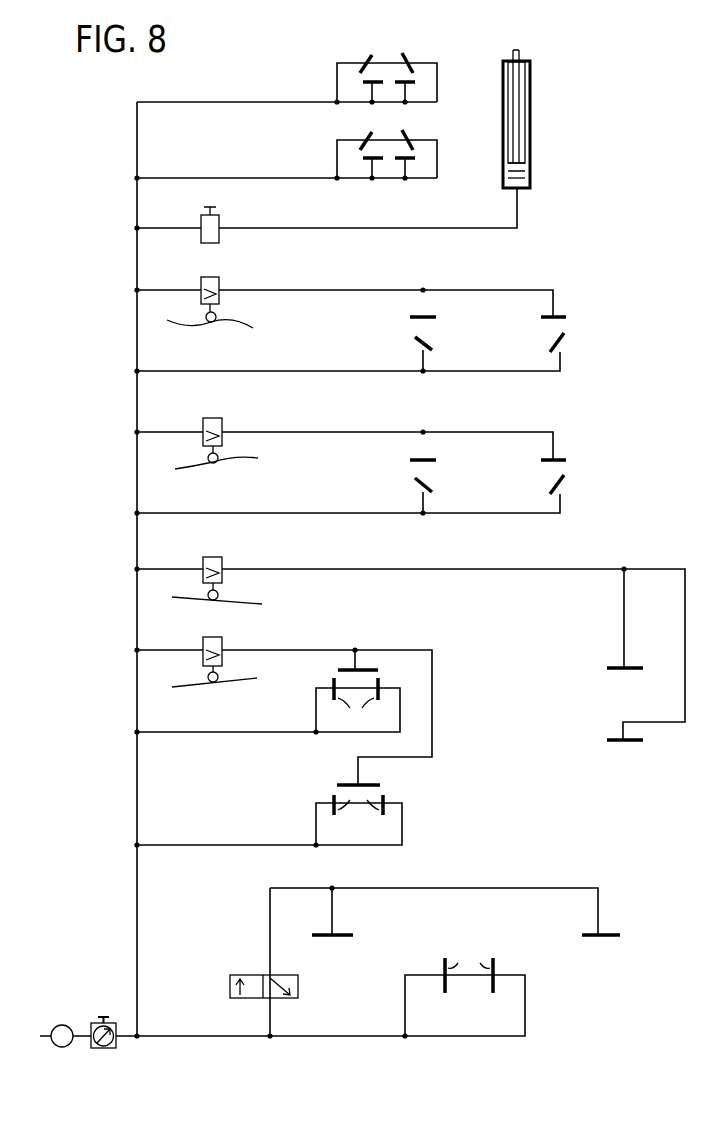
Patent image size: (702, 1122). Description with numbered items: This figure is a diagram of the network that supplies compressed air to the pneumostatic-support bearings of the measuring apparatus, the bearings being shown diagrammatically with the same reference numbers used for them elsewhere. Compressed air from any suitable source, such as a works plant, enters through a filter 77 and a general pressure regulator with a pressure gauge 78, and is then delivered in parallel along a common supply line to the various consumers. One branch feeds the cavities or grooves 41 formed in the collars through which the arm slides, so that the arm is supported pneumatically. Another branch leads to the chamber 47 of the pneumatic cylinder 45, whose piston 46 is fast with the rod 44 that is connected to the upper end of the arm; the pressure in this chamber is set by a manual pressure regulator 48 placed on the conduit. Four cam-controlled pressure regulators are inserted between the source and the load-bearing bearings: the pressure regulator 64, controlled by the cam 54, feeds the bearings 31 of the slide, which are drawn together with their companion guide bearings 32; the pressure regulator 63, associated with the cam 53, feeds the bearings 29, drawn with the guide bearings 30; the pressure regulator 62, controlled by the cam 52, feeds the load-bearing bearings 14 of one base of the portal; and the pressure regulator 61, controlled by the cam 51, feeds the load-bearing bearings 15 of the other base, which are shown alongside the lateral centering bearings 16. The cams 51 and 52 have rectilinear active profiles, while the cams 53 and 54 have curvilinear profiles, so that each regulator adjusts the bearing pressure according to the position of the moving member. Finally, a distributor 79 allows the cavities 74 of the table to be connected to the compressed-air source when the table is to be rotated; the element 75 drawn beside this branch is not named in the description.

The load-bearing bearing 14 is at (638, 665).
The load-bearing bearing 15 is at (370, 664).
The lateral centering bearing 16 is at (358, 755).
The load-bearing bearing 29 is at (437, 455).
The guide bearing 30 is at (435, 489).
The load-bearing bearing 31 is at (437, 313).
The guide bearing 32 is at (435, 347).
The cavities or grooves 41 is at (369, 55).
The rod 44 is at (518, 93).
The pneumatic cylinder 45 is at (531, 124).
The piston 46 is at (531, 159).
The chamber 47 is at (531, 182).
The manual pressure regulator 48 is at (222, 222).
The cam 51 is at (243, 678).
The cam 52 is at (240, 602).
The cam 53 is at (240, 458).
The cam 54 is at (238, 328).
The pressure regulator 61 is at (205, 640).
The pressure regulator 62 is at (225, 565).
The pressure regulator 63 is at (225, 426).
The pressure regulator 64 is at (222, 288).
The cavities 74 is at (343, 933).
The solenoid 75 is at (485, 968).
The filter 77 is at (62, 1024).
The general pressure regulator with pressure gauge 78 is at (107, 1022).
The distributor 79 is at (250, 973).